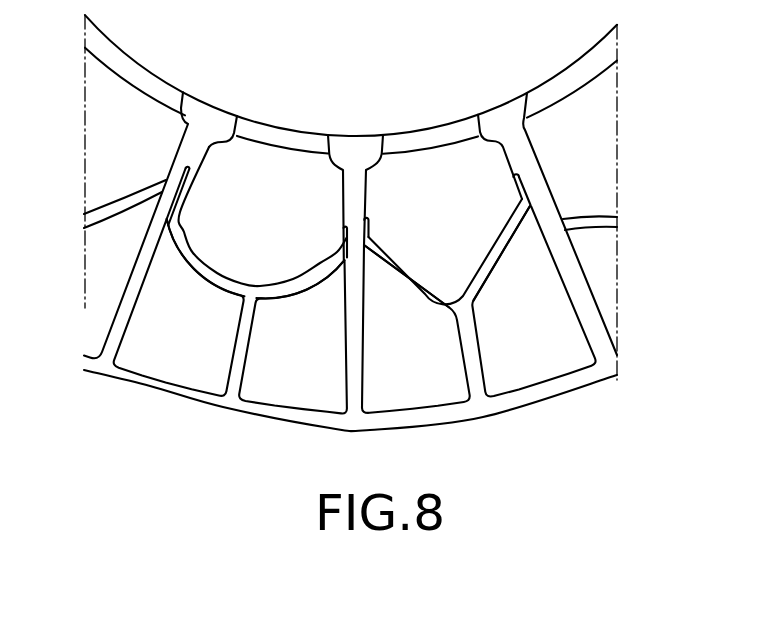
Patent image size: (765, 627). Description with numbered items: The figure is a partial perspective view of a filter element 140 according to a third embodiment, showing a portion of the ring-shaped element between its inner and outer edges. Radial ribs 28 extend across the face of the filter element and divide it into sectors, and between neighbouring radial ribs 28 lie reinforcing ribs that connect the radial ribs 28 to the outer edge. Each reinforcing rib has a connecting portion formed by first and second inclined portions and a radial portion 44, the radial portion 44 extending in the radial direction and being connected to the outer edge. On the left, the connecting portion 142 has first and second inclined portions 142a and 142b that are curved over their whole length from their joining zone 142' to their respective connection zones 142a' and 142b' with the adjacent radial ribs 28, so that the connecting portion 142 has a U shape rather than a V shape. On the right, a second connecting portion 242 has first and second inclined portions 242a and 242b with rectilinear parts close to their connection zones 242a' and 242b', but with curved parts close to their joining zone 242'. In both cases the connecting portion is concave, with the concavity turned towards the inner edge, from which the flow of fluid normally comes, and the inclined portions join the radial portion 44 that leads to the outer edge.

The frame / ring structure 140 is at (199, 364).
The radial rib 28 is at (130, 293).
The radial portion 44 is at (240, 368).
The connecting portion 142 is at (228, 209).
The joining zone 142' is at (263, 217).
The first inclined portion 142a is at (201, 263).
The second inclined portion 142b is at (300, 294).
The connection zone 142a' is at (149, 194).
The connection zone 142b' is at (316, 244).
The spring arm 242 is at (485, 208).
The joining zone 242' is at (446, 251).
The first inclined portion 242a is at (406, 288).
The second inclined portion 242b is at (514, 260).
The connection zone 242a' is at (400, 209).
The connection zone 242b' is at (560, 166).